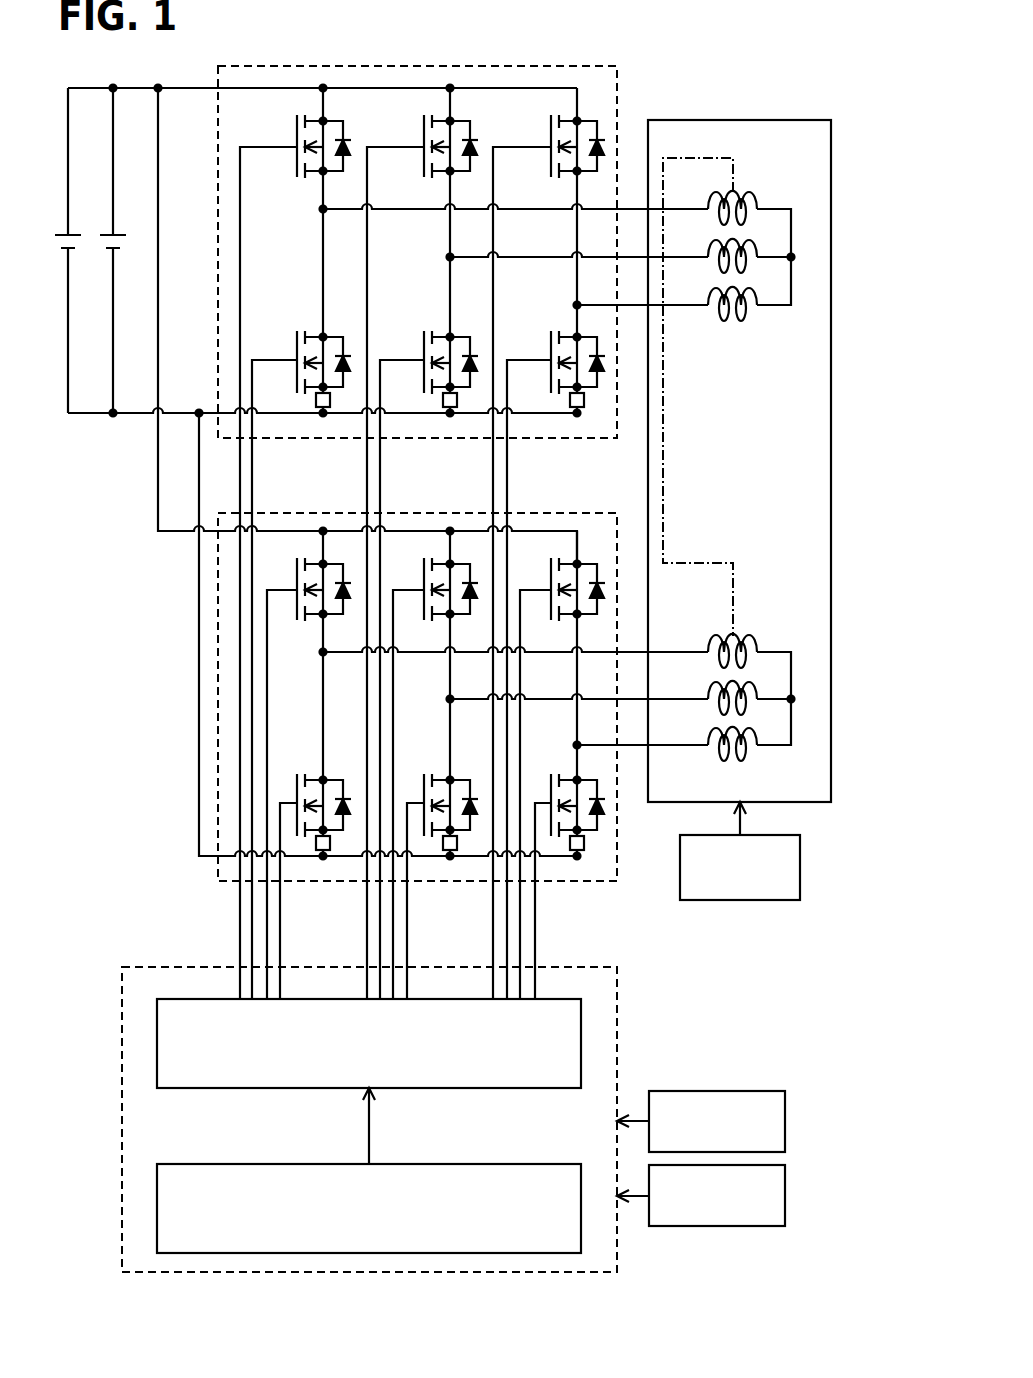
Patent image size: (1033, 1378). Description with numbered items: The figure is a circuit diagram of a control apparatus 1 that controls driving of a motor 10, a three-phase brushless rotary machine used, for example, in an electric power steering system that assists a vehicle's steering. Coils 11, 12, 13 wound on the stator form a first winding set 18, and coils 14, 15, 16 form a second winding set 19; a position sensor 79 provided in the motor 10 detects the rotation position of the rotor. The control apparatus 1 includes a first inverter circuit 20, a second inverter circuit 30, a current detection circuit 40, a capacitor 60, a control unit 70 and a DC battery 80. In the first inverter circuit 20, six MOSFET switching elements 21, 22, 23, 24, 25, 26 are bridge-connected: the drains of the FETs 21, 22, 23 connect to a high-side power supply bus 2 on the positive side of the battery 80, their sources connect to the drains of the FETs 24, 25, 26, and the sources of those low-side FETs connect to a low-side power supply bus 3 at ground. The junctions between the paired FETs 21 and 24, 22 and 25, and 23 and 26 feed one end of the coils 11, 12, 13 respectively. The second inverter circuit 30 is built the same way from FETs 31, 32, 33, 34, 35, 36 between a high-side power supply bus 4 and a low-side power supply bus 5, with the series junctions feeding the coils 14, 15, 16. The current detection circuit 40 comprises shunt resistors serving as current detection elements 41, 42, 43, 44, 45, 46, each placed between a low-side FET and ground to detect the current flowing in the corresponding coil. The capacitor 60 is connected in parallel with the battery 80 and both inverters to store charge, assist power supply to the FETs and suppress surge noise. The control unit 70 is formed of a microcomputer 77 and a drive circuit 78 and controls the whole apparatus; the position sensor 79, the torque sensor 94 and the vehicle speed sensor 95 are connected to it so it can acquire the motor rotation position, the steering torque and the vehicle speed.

The control apparatus 1 is at (97, 1221).
The high-side power supply bus 2 is at (185, 87).
The low-side power supply bus 3 is at (200, 412).
The high-side power supply bus 4 is at (170, 533).
The low-side power supply bus 5 is at (202, 859).
The motor 10 is at (831, 165).
The coil 11 is at (757, 197).
The coil 12 is at (757, 245).
The coil 13 is at (757, 300).
The coil 14 is at (757, 640).
The coil 15 is at (757, 688).
The coil 16 is at (757, 742).
The first winding set 18 is at (757, 360).
The second winding set 19 is at (766, 596).
The first inverter circuit 20 is at (620, 90).
The switching element (FET) 21 is at (338, 124).
The switching element (FET) 22 is at (465, 124).
The switching element (FET) 23 is at (587, 120).
The switching element (U-low FET) 24 is at (330, 336).
The switching element (V-low FET) 25 is at (457, 336).
The switching element (W-low FET) 26 is at (582, 336).
The second inverter circuit 30 is at (226, 884).
The switching element (FET) 31 is at (313, 559).
The switching element (FET) 32 is at (440, 559).
The switching element (FET) 33 is at (567, 559).
The switching element (U-low FET) 34 is at (331, 779).
The switching element (V-low FET) 35 is at (458, 779).
The switching element (W-low FET) 36 is at (583, 779).
The current detection circuit 40 is at (470, 410).
The current detection element 41 is at (317, 401).
The current detection element 42 is at (444, 401).
The current detection element 43 is at (571, 401).
The current detection element 44 is at (317, 845).
The current detection element 45 is at (444, 845).
The current detection element 46 is at (571, 845).
The capacitor 60 is at (111, 233).
The control unit 70 is at (618, 1003).
The microcomputer 77 is at (581, 1240).
The drive circuit 78 is at (581, 1059).
The position sensor 79 is at (800, 865).
The DC battery 80 is at (66, 233).
The torque sensor 94 is at (785, 1119).
The vehicle speed sensor 95 is at (785, 1193).